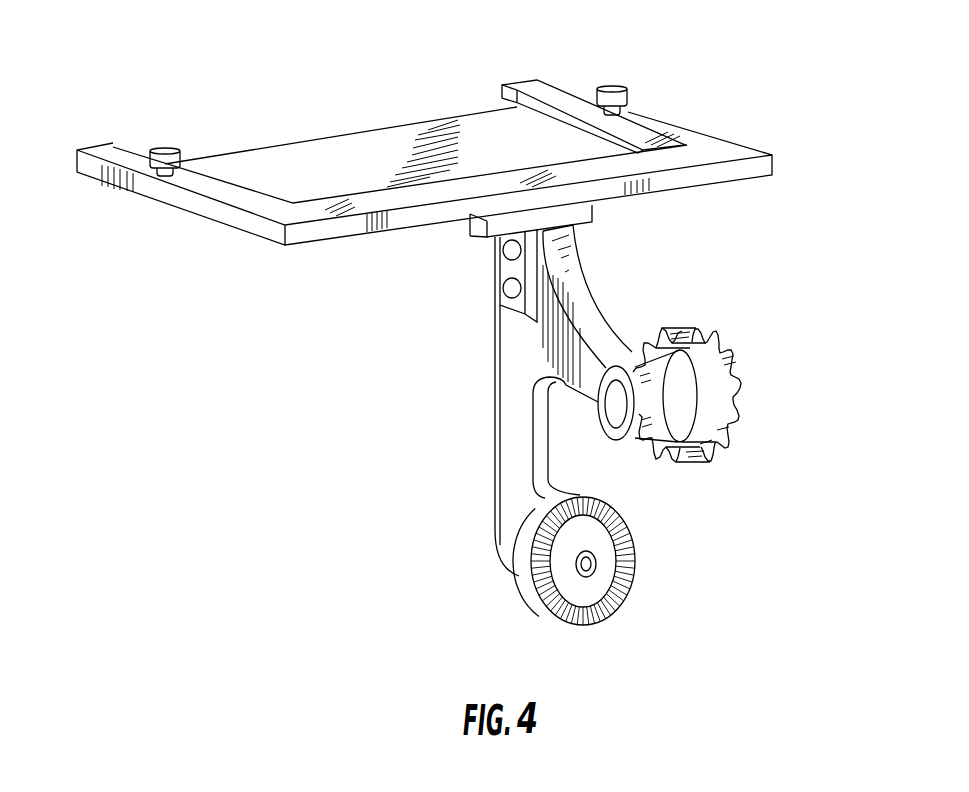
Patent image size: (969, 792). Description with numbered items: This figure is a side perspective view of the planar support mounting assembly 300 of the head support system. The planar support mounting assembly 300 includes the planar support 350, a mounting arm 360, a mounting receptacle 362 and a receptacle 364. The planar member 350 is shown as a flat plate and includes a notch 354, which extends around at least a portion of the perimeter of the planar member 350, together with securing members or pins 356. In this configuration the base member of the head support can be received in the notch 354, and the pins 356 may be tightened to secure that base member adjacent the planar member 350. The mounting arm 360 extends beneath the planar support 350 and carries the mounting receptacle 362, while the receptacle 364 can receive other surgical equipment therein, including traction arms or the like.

The planar support mounting assembly 300 is at (752, 98).
The planar support 350 is at (383, 147).
The notch 354 is at (535, 108).
The securing members or pins 356 is at (167, 147).
The mounting arm 360 is at (477, 485).
The mounting receptacle 362 is at (635, 567).
The receptacle 364 is at (618, 407).